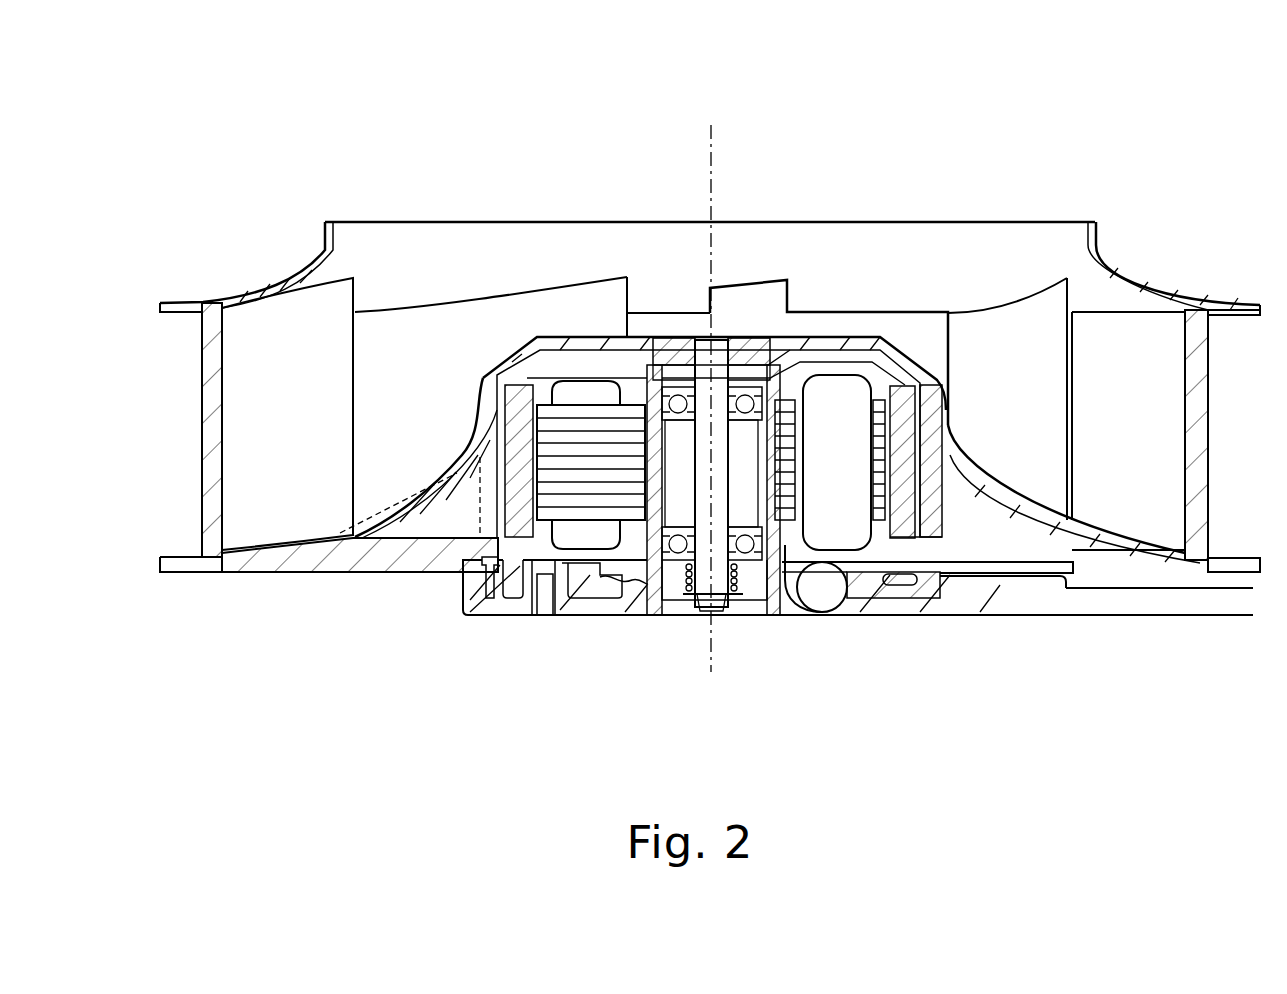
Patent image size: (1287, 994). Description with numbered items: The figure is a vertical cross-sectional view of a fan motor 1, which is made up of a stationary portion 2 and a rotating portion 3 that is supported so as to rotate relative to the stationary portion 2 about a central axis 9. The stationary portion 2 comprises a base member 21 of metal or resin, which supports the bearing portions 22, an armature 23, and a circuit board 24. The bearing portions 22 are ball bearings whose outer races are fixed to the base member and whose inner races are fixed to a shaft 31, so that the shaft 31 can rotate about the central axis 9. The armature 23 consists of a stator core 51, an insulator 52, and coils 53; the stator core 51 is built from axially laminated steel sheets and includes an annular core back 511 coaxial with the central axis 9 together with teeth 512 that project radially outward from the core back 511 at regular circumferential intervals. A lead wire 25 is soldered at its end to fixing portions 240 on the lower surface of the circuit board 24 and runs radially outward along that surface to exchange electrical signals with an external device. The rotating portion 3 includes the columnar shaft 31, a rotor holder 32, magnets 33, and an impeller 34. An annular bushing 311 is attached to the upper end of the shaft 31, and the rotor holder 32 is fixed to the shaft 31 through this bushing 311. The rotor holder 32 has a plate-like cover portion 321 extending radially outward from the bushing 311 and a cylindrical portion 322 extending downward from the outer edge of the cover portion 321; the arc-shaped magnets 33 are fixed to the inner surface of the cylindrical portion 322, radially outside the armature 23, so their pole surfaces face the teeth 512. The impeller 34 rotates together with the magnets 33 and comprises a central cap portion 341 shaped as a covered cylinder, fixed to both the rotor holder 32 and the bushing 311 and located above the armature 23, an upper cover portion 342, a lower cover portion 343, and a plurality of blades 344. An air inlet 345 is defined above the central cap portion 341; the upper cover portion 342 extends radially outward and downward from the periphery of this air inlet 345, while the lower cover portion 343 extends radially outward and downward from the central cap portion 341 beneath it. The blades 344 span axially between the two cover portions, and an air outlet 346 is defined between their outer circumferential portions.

The fan motor 1 is at (530, 108).
The stationary portion 2 is at (990, 633).
The rotating portion 3 is at (1129, 247).
The central axis 9 is at (711, 136).
The base member 21 is at (514, 608).
The bearing portions 22 is at (678, 602).
The armature 23 is at (558, 163).
The circuit board 24 is at (587, 600).
The lead wire 25 is at (1103, 606).
The shaft 31 is at (722, 598).
The rotor holder 32 is at (843, 170).
The magnets 33 is at (495, 498).
The impeller 34 is at (462, 143).
The stator core 51 is at (640, 352).
The insulator 52 is at (610, 455).
The coils 53 is at (567, 383).
The fixing portions 240 is at (905, 578).
The bushing 311 is at (747, 335).
The cover portion 321 is at (862, 352).
The cylindrical portion 322 is at (940, 440).
The central cap portion 341 is at (548, 338).
The upper cover portion 342 is at (245, 293).
The lower cover portion 343 is at (300, 540).
The blades 344 is at (424, 353).
The air inlet 345 is at (1007, 230).
The air outlet 346 is at (184, 440).
The core back 511 is at (813, 612).
The teeth 512 is at (862, 598).